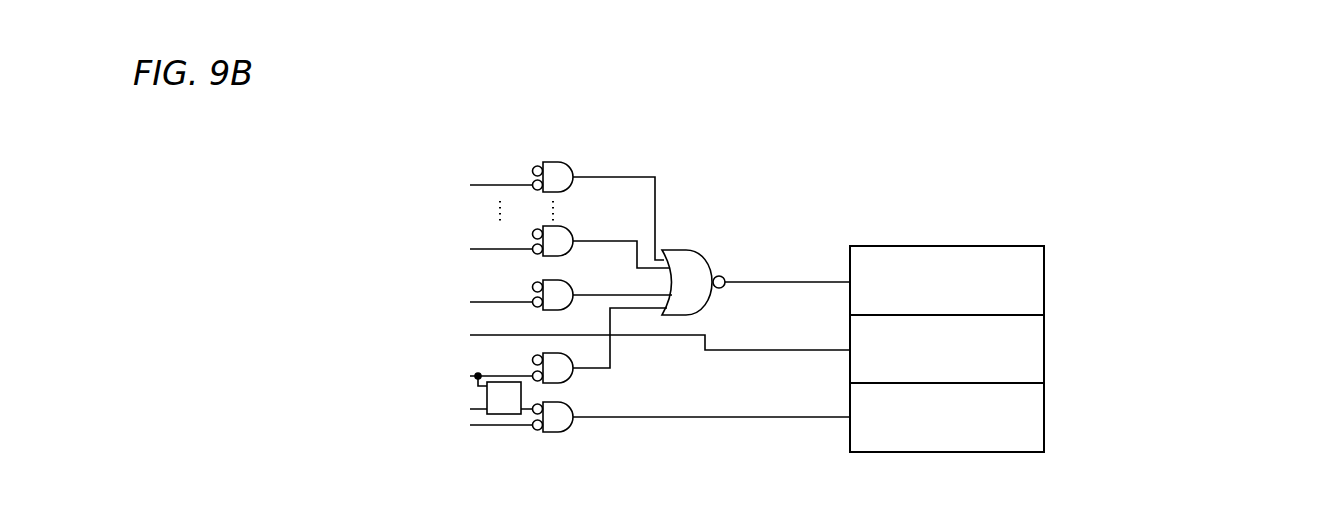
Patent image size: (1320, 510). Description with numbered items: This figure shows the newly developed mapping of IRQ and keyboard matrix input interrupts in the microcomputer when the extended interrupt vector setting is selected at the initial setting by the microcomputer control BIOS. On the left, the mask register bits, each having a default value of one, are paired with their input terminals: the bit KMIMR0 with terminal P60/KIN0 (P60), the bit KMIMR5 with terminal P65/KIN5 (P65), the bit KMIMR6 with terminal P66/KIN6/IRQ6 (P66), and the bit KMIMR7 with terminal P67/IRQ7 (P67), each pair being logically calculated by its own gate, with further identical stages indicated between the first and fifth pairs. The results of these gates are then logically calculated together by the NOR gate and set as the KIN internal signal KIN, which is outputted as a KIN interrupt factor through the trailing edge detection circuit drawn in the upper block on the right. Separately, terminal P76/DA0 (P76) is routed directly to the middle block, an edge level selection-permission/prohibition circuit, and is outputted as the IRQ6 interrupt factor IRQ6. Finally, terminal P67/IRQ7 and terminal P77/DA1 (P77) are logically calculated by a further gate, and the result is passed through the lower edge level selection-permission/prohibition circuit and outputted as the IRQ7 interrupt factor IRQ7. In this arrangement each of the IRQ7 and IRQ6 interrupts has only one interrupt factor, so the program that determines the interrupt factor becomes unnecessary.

The key-in mask register bit KMIMR0 is at (532, 171).
The terminal P60/KIN0 P60 is at (453, 187).
The key-in mask register bit KMIMR5 is at (532, 234).
The terminal P65/KIN5 P65 is at (453, 249).
The key-in mask register bit KMIMR6 is at (532, 287).
The terminal P66/KIN6/IRQ6 P66 is at (425, 305).
The terminal P76/DA0 P76 is at (615, 336).
The key-in mask register bit KMIMR7 is at (532, 360).
The terminal P67/IRQ7 P67 is at (453, 393).
The terminal P77/DA1 P77 is at (615, 417).
The KIN internal signal KIN is at (1122, 283).
The IRQ6 interrupt factor IRQ6 is at (1044, 349).
The IRQ7 interrupt factor IRQ7 is at (1044, 416).